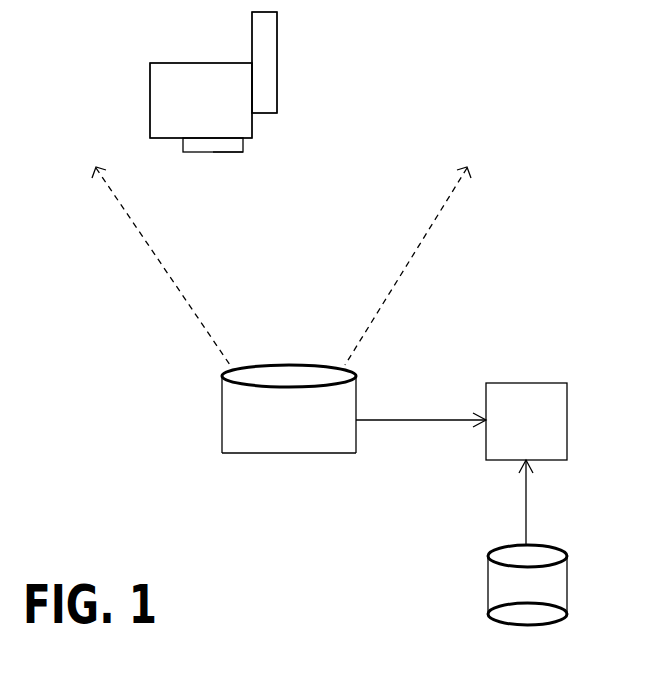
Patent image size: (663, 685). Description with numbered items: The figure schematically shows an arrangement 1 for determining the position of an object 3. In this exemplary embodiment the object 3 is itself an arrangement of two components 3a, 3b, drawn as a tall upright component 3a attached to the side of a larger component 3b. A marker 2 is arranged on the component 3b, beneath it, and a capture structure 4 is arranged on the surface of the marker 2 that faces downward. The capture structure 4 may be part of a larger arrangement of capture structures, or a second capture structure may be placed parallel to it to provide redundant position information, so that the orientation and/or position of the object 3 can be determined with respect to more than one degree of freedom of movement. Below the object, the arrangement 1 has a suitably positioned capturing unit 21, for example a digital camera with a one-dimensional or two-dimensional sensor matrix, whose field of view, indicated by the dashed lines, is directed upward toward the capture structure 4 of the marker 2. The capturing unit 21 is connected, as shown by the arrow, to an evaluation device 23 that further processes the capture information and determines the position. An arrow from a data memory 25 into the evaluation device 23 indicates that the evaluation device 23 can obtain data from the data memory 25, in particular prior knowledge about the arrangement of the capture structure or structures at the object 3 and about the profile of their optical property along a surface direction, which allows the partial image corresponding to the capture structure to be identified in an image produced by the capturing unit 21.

The arrangement 1 is at (480, 95).
The marker 2 is at (243, 146).
The object 3 is at (297, 53).
The component 3a is at (252, 27).
The component 3b is at (150, 80).
The capture structure 4 is at (213, 152).
The capturing unit 21 is at (272, 453).
The evaluation device 23 is at (486, 448).
The data memory 25 is at (488, 575).